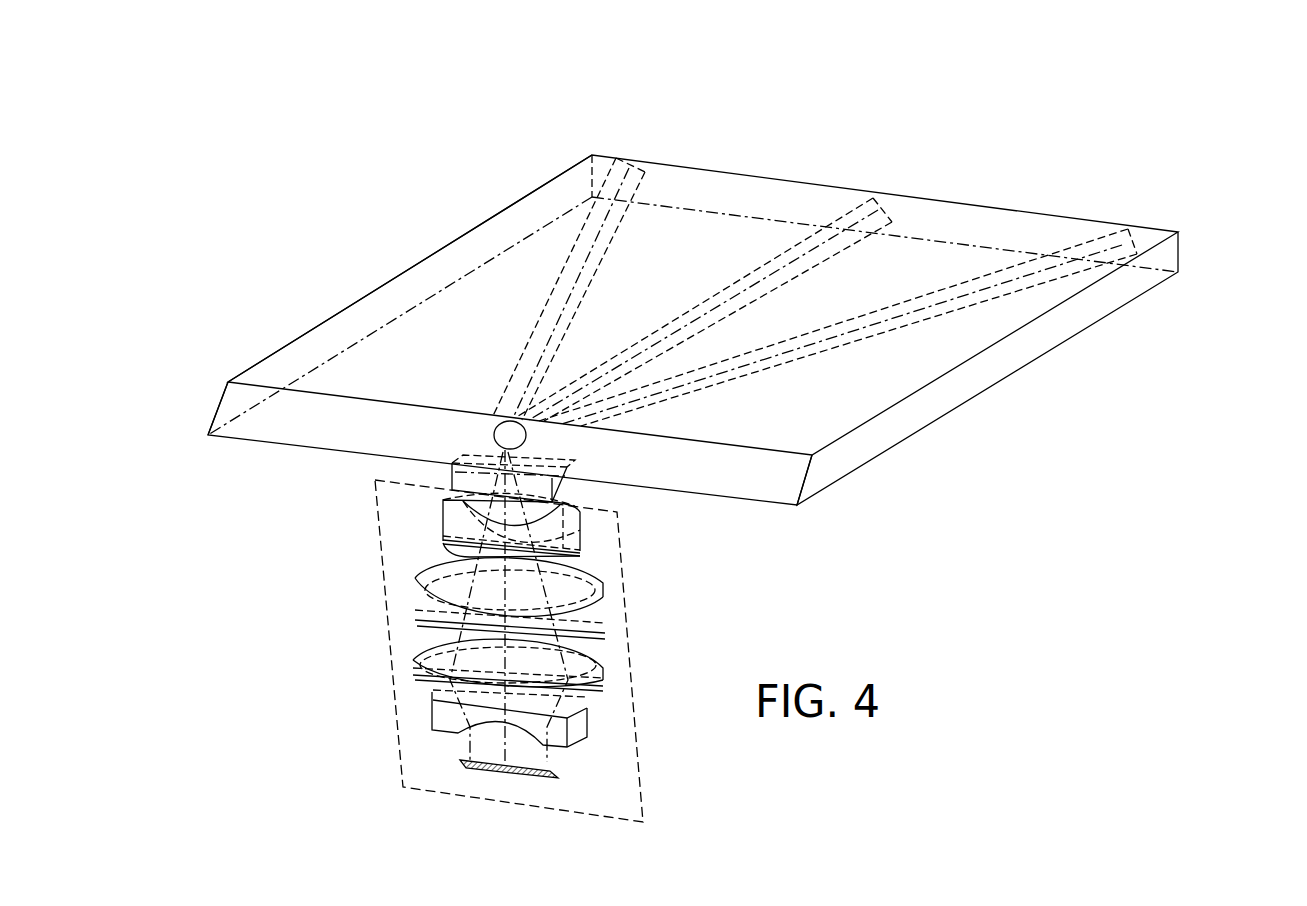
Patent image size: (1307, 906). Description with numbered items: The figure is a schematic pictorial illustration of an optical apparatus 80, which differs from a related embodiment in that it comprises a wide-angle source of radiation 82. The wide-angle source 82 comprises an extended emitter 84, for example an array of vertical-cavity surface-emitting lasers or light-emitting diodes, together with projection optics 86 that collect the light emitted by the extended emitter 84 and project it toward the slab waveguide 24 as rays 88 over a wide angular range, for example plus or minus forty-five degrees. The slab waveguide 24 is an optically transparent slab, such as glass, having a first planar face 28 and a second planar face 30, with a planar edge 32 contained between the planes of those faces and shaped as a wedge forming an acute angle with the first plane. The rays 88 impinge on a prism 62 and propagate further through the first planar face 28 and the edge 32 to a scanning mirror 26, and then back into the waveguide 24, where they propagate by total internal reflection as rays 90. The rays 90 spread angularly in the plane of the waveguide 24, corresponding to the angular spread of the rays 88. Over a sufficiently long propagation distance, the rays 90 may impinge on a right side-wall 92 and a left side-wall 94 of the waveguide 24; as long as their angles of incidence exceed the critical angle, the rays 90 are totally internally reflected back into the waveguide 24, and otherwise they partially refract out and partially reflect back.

The optical apparatus 80 is at (1205, 130).
The slab waveguide 24 is at (400, 340).
The scanning mirror 26 is at (510, 422).
The first planar face 28 is at (878, 455).
The second planar face 30 is at (993, 328).
The planar edge 32 is at (218, 408).
The prism 62 is at (557, 490).
The wide-angle source of radiation 82 is at (498, 650).
The extended emitter 84 is at (487, 767).
The projection optics 86 is at (417, 578).
The rays 88 is at (557, 537).
The rays 90 is at (673, 325).
The right side-wall 92 is at (1113, 288).
The left side-wall 94 is at (478, 246).